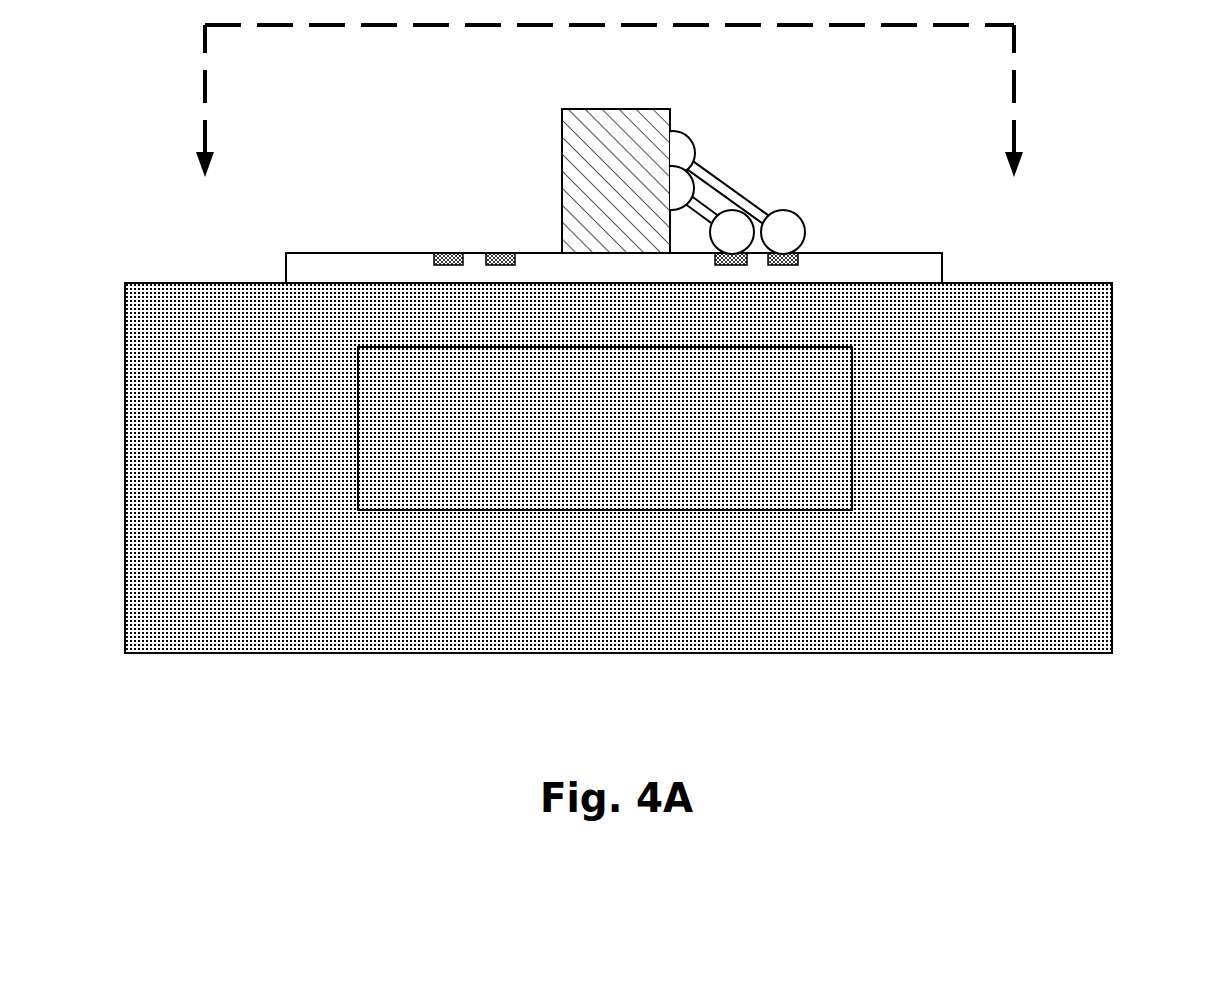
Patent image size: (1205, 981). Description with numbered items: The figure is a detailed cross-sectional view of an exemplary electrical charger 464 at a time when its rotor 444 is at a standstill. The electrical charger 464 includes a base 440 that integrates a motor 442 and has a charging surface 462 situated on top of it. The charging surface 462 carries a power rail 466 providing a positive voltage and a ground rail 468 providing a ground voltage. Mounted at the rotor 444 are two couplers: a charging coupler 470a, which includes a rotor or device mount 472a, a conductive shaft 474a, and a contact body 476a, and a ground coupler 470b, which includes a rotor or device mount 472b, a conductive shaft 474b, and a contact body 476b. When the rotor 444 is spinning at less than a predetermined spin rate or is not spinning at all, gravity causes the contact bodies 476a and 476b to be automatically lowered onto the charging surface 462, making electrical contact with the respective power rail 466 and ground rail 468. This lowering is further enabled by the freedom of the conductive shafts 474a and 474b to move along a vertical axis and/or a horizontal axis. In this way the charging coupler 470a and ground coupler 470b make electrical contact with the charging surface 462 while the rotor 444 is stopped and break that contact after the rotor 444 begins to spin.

The base 440 is at (1112, 480).
The motor 442 is at (605, 428).
The rotor 444 is at (628, 109).
The charging surface 462 is at (320, 252).
The electrical charger 464 is at (1095, 98).
The power rail 466 is at (447, 253).
The ground rail 468 is at (500, 253).
The charging coupler 470a is at (776, 175).
The ground coupler 470b is at (668, 247).
The rotor or device mount 472a is at (698, 128).
The rotor or device mount 472b is at (678, 190).
The conductive shaft 474a is at (745, 197).
The conductive shaft 474b is at (688, 212).
The contact body 476a is at (805, 227).
The contact body 476b is at (688, 225).